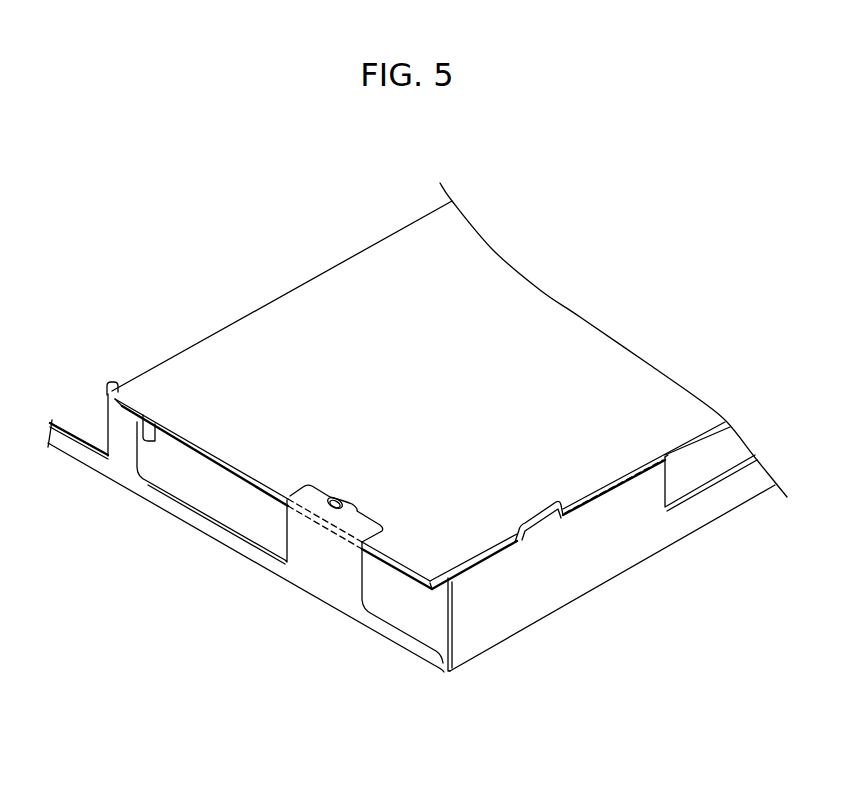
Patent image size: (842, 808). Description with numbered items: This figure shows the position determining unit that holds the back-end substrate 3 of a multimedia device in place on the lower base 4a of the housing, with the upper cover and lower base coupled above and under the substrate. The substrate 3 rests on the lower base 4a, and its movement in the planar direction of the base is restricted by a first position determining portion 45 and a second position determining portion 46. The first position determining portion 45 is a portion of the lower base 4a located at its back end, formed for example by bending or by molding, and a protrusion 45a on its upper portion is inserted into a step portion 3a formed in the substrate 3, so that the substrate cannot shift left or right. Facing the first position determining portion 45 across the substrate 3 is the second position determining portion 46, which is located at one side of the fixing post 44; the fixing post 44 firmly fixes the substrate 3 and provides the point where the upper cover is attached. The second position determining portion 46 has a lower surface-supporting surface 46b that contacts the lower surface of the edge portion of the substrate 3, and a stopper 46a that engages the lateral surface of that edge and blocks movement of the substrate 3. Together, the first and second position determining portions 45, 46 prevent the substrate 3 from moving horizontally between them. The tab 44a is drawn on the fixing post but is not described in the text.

The back-end substrate 3 is at (558, 331).
The step portion 3a is at (470, 556).
The lower base 4a is at (672, 537).
The fixing post 44 is at (323, 556).
The bracket tab with hole 44a is at (321, 494).
The first position determining portion 45 is at (562, 568).
The protrusion 45a is at (540, 517).
The second position determining portion 46 is at (100, 440).
The stopper 46a is at (110, 384).
The lower surface-supporting surface 46b is at (144, 400).